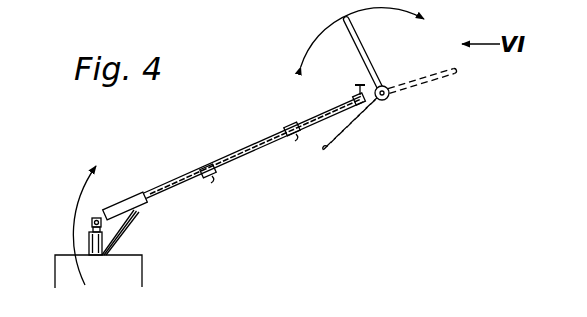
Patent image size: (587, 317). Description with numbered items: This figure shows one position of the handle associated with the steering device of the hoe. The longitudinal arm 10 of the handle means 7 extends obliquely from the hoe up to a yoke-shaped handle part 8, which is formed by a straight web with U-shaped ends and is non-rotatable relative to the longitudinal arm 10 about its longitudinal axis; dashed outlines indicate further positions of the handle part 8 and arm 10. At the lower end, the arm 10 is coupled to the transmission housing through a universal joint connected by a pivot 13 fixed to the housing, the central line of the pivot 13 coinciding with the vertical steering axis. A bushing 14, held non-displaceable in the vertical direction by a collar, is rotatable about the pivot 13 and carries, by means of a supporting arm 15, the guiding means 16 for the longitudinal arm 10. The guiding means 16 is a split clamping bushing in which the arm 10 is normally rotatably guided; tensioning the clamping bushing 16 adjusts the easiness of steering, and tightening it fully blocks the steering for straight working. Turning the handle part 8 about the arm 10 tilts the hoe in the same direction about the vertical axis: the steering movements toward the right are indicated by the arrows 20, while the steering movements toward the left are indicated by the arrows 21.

The handle means 7 is at (266, 148).
The handle part 8 is at (367, 52).
The longitudinal arm 10 is at (343, 119).
The pivot 13 is at (93, 222).
The bushing 14 is at (101, 257).
The supporting arm 15 is at (124, 226).
The guiding means 16 is at (130, 201).
The arrows 20 is at (289, 122).
The arrows 21 is at (205, 178).